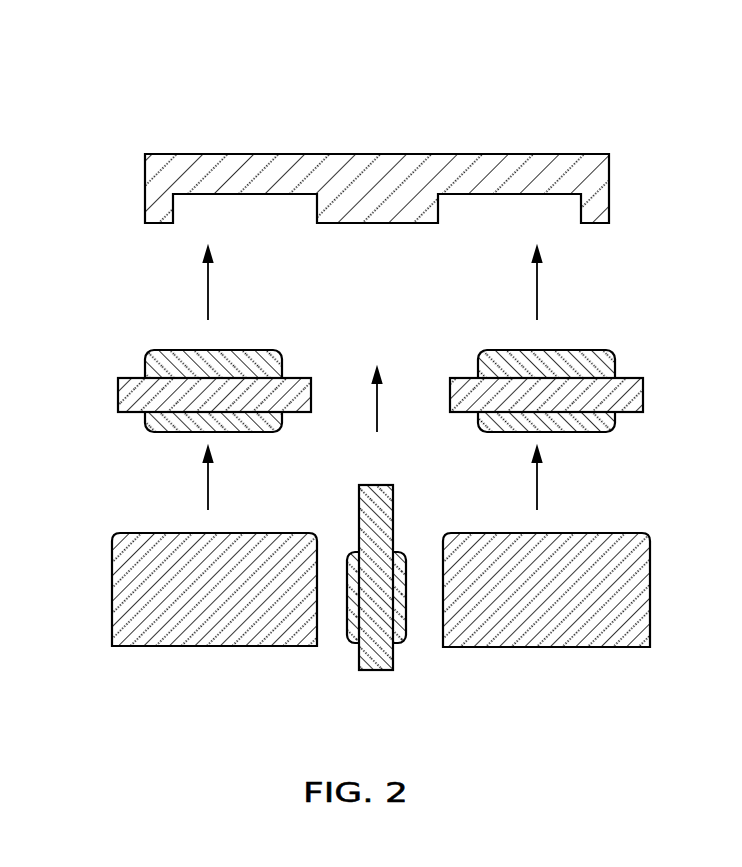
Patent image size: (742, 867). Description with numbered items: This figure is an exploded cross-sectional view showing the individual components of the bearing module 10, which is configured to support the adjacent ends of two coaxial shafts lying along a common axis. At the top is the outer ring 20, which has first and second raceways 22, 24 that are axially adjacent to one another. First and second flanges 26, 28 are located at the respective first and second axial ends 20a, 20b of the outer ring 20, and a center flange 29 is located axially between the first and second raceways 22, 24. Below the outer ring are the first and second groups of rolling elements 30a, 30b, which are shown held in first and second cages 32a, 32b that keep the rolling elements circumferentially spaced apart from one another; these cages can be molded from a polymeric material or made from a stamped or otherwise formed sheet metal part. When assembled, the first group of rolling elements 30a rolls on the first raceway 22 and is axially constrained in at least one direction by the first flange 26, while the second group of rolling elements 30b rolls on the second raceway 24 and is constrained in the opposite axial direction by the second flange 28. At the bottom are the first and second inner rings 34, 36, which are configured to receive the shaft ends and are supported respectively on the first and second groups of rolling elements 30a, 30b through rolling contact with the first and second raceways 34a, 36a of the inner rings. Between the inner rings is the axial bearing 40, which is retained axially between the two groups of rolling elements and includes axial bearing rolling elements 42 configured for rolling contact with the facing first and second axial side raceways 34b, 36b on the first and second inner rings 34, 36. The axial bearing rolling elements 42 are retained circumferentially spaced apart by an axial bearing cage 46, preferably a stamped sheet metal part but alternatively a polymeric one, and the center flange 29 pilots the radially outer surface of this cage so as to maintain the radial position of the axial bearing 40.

The bearing module 10 is at (133, 119).
The outer ring 20 is at (368, 163).
The first axial end of outer ring 20a is at (145, 170).
The second axial end of outer ring 20b is at (610, 160).
The first raceway 22 is at (203, 197).
The second raceway 24 is at (548, 196).
The first flange 26 is at (150, 213).
The second flange 28 is at (600, 213).
The center flange 29 is at (381, 225).
The first group of rolling elements 30a is at (170, 358).
The second group of rolling elements 30b is at (492, 358).
The first cage 32a is at (128, 398).
The second cage 32b is at (627, 398).
The first inner ring 34 is at (223, 602).
The first raceway of first inner ring 34a is at (185, 531).
The first axial side raceway 34b is at (320, 556).
The second inner ring 36 is at (553, 599).
The second raceway of second inner ring 36a is at (607, 531).
The second axial side raceway 36b is at (440, 556).
The axial bearing 40 is at (345, 659).
The axial bearing rolling elements 42 is at (397, 562).
The axial bearing cage 46 is at (360, 493).